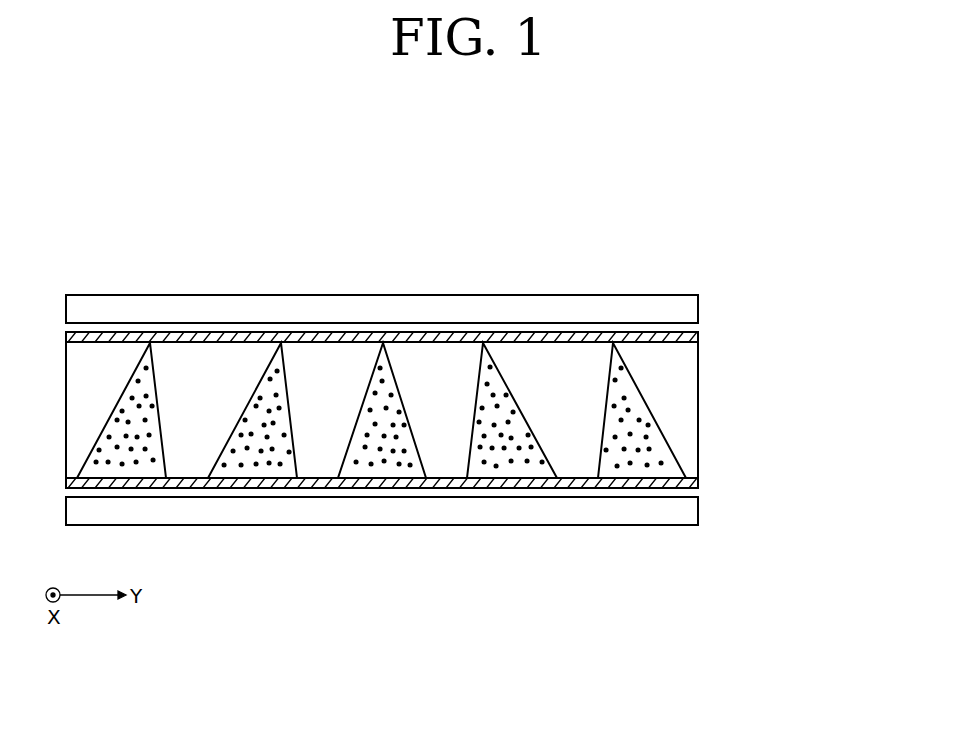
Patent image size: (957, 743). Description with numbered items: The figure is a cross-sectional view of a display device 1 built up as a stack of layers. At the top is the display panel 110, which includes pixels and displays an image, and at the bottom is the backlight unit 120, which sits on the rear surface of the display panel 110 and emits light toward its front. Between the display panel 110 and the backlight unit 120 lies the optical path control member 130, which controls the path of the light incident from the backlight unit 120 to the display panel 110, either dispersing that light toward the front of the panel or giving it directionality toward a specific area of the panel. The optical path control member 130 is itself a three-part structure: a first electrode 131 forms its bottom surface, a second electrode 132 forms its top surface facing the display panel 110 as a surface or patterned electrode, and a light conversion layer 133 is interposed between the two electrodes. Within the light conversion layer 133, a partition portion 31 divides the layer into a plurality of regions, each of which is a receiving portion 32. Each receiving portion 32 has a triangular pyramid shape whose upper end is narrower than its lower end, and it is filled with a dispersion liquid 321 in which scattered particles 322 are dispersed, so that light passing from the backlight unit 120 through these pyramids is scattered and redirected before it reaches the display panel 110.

The display device 1 is at (712, 283).
The display panel 110 is at (699, 309).
The backlight unit 120 is at (699, 510).
The optical path control member 130 is at (473, 411).
The first electrode 131 is at (699, 485).
The second electrode 132 is at (699, 337).
The light conversion layer 133 is at (450, 410).
The partition portion 31 is at (682, 427).
The receiving portion 32 is at (422, 410).
The dispersion liquid 321 is at (628, 368).
The scattered particles 322 is at (643, 395).